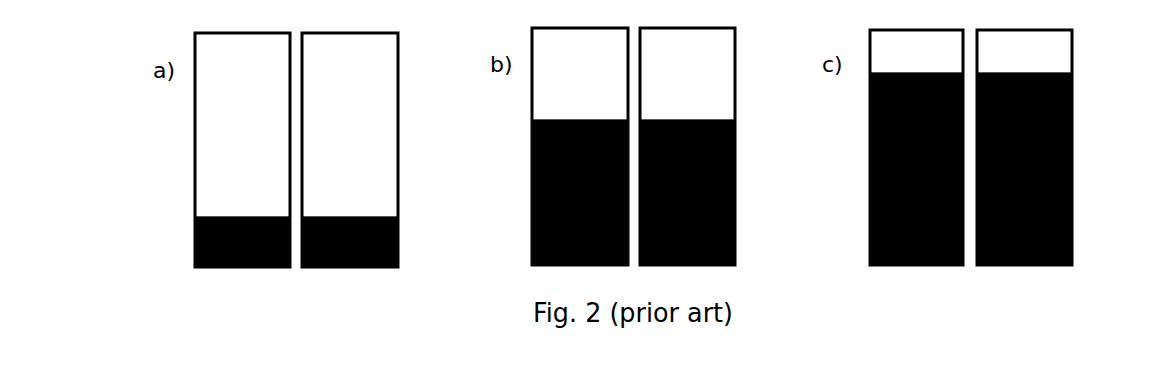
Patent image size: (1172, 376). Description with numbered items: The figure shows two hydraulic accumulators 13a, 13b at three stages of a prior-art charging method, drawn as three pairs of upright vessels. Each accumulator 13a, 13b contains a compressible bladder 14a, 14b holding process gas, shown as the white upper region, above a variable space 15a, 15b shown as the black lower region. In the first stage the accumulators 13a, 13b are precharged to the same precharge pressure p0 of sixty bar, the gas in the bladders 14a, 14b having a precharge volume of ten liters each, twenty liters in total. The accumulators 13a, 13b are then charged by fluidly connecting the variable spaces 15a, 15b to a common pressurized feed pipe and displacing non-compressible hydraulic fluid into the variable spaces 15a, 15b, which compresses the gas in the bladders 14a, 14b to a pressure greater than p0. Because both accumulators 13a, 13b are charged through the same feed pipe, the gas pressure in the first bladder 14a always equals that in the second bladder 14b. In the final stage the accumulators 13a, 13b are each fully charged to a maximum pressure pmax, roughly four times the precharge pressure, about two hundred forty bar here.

The first hydraulic accumulator 13a is at (195, 187).
The second hydraulic accumulator 13b is at (398, 182).
The first compressible bladder 14a is at (268, 188).
The second compressible bladder 14b is at (364, 188).
The first variable space 15a is at (195, 253).
The second variable space 15b is at (398, 253).